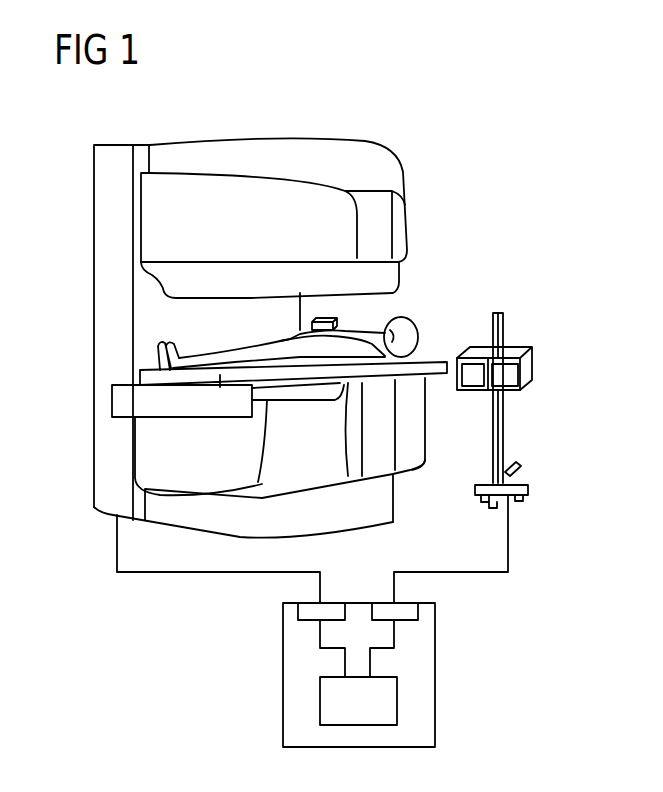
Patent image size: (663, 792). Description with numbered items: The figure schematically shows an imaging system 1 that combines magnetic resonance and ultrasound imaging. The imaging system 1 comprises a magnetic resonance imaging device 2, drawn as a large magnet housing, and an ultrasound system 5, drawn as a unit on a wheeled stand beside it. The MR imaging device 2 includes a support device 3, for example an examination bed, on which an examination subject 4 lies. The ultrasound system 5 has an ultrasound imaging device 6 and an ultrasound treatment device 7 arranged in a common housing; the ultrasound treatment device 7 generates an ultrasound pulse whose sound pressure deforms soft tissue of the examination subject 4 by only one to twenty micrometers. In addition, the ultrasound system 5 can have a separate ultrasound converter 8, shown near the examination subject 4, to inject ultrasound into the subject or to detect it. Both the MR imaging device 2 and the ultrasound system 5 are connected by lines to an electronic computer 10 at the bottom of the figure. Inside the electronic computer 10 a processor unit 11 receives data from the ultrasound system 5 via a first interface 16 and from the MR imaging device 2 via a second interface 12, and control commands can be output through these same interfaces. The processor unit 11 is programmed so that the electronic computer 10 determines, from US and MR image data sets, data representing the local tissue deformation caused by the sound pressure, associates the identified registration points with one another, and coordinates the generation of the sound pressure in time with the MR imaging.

The imaging system 1 is at (515, 108).
The magnetic resonance imaging device 2 is at (103, 268).
The support device 3 is at (137, 376).
The examination subject 4 is at (420, 332).
The ultrasound system 5 is at (546, 406).
The ultrasound imaging device 6 is at (470, 392).
The ultrasound treatment device 7 is at (538, 367).
The ultrasound converter 8 is at (340, 325).
The electronic computer 10 is at (283, 677).
The processor unit 11 is at (397, 700).
The second interface 12 is at (305, 612).
The first interface 16 is at (410, 612).